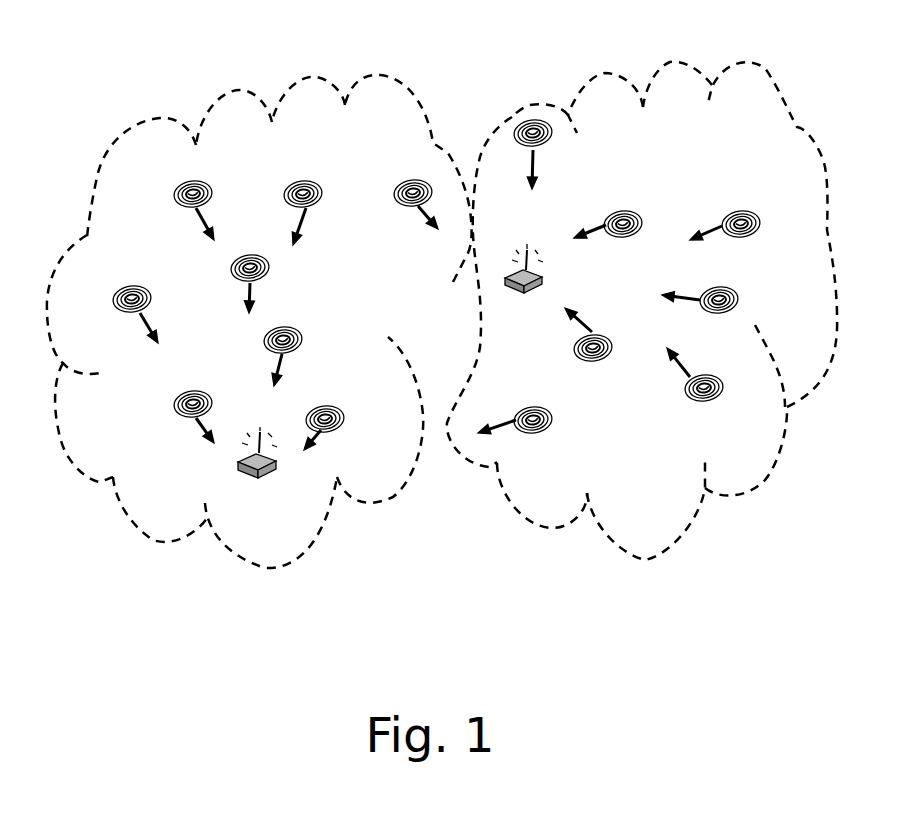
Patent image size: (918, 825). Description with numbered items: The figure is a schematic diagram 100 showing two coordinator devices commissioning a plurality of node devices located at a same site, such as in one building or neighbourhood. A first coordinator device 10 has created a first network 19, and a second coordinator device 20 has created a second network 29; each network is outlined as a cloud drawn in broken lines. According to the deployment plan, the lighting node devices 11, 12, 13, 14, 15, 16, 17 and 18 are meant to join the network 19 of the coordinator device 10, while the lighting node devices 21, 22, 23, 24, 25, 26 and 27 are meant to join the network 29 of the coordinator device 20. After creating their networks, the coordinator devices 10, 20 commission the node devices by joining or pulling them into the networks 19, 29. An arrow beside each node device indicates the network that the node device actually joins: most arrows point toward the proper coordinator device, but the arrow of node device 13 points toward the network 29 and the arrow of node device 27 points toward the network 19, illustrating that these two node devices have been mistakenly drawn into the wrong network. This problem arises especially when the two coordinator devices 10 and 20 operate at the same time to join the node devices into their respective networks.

The diagram 100 is at (538, 69).
The coordinator device 10 is at (260, 478).
The node device 11 is at (185, 183).
The node device 12 is at (300, 180).
The node device 13 is at (410, 178).
The node device 14 is at (128, 284).
The node device 15 is at (270, 271).
The node device 16 is at (173, 400).
The node device 17 is at (302, 340).
The node device 18 is at (346, 418).
The network 19 is at (138, 479).
The coordinator device 20 is at (522, 295).
The node device 21 is at (513, 128).
The node device 22 is at (618, 210).
The node device 23 is at (733, 210).
The node device 24 is at (740, 300).
The node device 25 is at (725, 389).
The node device 26 is at (592, 362).
The node device 27 is at (535, 433).
The network 29 is at (744, 465).